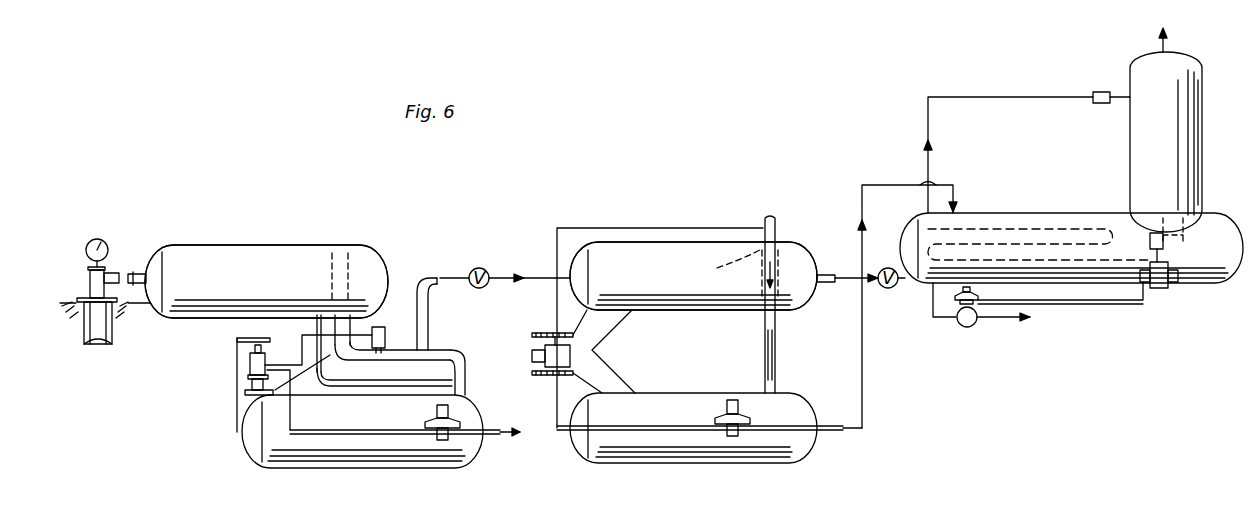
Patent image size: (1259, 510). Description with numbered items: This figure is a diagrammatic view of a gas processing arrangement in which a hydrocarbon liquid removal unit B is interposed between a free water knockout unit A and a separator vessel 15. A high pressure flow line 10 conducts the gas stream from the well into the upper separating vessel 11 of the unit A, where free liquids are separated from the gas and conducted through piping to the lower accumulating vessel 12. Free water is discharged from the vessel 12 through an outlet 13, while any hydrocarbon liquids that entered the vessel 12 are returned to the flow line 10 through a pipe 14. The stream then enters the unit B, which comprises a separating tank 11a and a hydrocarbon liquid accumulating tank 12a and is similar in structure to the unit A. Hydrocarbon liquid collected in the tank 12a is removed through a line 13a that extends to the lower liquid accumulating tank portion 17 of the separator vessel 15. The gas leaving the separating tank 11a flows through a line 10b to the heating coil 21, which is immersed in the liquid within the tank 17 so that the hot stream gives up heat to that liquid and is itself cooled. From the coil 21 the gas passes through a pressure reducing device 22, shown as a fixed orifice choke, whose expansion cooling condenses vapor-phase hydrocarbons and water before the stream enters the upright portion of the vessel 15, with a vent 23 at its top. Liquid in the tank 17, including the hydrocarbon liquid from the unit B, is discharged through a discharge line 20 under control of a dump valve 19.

The high pressure flow line 10 is at (135, 272).
The upper separating vessel 11 is at (275, 248).
The lower accumulating vessel 12 is at (303, 470).
The outlet 13 is at (500, 442).
The pipe 14 is at (466, 373).
The separating tank 11a is at (630, 242).
The hydrocarbon liquid accumulating tank 12a is at (638, 466).
The line 13a is at (860, 440).
The line 10b is at (826, 272).
The separator vessel 15 is at (1204, 90).
The lower liquid accumulating tank portion 17 is at (1128, 275).
The liquid discharge or dump valve 19 is at (983, 295).
The discharge line 20 is at (1003, 322).
The heating coil 21 is at (1068, 275).
The pressure reducing device 22 is at (1093, 92).
The vent outlet 23 is at (1170, 48).
The free water knockout unit A is at (232, 245).
The hydrocarbon liquid removal unit B is at (708, 242).